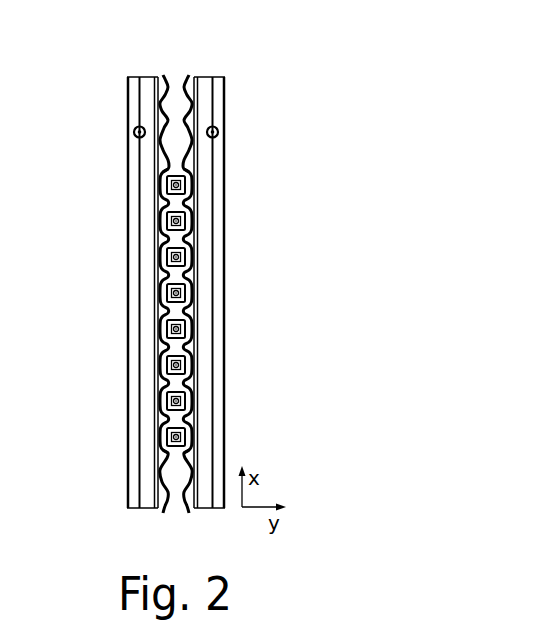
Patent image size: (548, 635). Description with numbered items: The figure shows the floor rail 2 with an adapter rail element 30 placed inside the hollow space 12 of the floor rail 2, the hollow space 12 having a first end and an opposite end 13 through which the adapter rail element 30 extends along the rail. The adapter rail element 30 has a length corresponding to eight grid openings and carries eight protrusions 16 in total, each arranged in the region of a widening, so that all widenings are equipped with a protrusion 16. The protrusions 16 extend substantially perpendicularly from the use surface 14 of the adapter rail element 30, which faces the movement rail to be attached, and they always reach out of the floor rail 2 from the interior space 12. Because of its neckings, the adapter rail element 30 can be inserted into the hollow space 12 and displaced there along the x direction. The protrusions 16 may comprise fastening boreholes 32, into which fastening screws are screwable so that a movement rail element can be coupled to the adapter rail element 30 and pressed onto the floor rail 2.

The floor rail 2 is at (237, 211).
The hollow space 12 is at (181, 89).
The second end opening of the channel 13 is at (173, 496).
The surface 14 is at (192, 310).
The protrusions 16 is at (185, 186).
The adapter rail element 30 is at (184, 242).
The fastening boreholes 32 is at (174, 185).